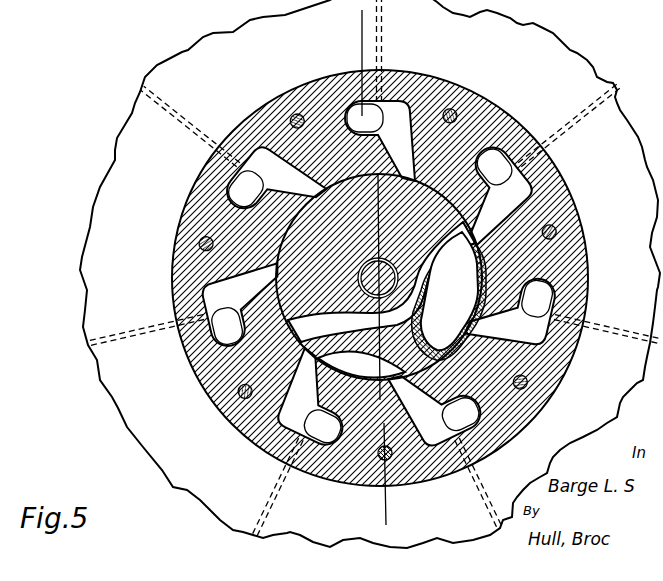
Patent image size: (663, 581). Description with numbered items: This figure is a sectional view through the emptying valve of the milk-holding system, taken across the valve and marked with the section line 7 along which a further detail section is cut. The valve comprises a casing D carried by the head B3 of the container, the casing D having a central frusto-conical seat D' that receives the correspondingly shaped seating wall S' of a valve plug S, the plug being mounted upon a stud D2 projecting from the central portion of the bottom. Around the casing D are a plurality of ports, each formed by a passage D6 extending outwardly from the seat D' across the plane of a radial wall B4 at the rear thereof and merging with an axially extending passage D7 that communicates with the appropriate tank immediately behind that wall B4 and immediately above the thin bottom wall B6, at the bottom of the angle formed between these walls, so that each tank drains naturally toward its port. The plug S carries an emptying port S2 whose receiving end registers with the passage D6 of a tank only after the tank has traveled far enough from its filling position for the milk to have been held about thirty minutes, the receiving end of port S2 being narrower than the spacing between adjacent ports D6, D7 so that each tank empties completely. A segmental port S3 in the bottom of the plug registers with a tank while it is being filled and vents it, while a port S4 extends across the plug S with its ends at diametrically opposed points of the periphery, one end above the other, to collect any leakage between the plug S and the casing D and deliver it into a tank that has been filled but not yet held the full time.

The head B3 is at (432, 58).
The radial wall B4 is at (200, 122).
The inner or bottom wall B6 is at (470, 133).
The casing of the emptying valve D is at (380, 278).
The frusto-conical seat D' is at (514, 353).
The stud D2 is at (245, 315).
The passage D6 is at (410, 112).
The axially extending passage D7 is at (240, 188).
The valve plug S is at (316, 277).
The seating wall S' is at (260, 276).
The emptying port S2 is at (449, 296).
The segmental port S3 is at (361, 365).
The port S4 is at (381, 282).
The line 7— 7 is at (372, 25).